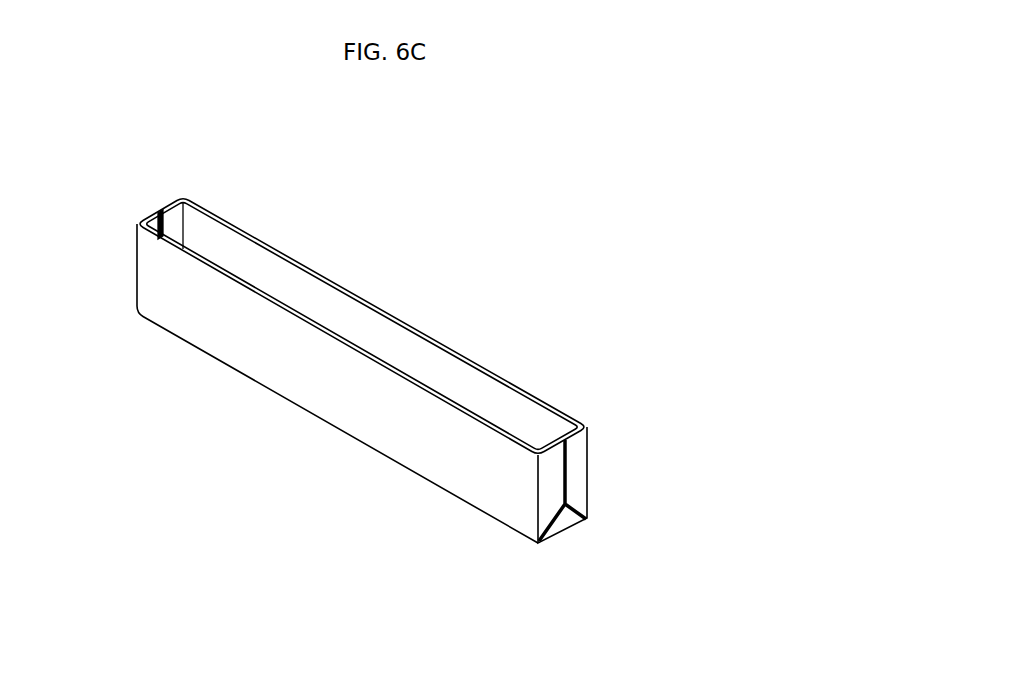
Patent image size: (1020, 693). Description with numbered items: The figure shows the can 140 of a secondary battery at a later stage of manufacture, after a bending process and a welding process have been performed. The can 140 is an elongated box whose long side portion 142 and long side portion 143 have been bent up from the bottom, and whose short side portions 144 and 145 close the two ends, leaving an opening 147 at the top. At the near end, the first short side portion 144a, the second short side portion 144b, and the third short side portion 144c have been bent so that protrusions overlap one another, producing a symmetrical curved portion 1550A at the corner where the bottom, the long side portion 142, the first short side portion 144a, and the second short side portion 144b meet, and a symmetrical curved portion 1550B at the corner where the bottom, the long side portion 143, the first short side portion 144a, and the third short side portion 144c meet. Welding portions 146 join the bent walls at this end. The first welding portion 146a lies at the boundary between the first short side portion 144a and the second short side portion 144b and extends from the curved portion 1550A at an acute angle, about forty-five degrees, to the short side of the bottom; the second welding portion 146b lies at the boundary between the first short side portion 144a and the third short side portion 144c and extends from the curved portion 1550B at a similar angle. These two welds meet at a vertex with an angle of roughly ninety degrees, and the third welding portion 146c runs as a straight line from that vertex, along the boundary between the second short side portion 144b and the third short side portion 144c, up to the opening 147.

The can 140 is at (406, 251).
The long side portion 142 is at (308, 402).
The long side portion 143 is at (460, 368).
The short side portion 144 is at (602, 437).
The first short side portion 144a is at (568, 528).
The second short side portion 144b is at (548, 458).
The third short side portion 144c is at (584, 423).
The short side portion 145 is at (156, 202).
The welding portions 146 is at (699, 448).
The first welding portion 146a is at (568, 480).
The second welding portion 146b is at (548, 520).
The third welding portion 146c is at (568, 462).
The opening 147 is at (266, 276).
The curved portion 1550A is at (538, 549).
The curved portion 1550B is at (596, 522).